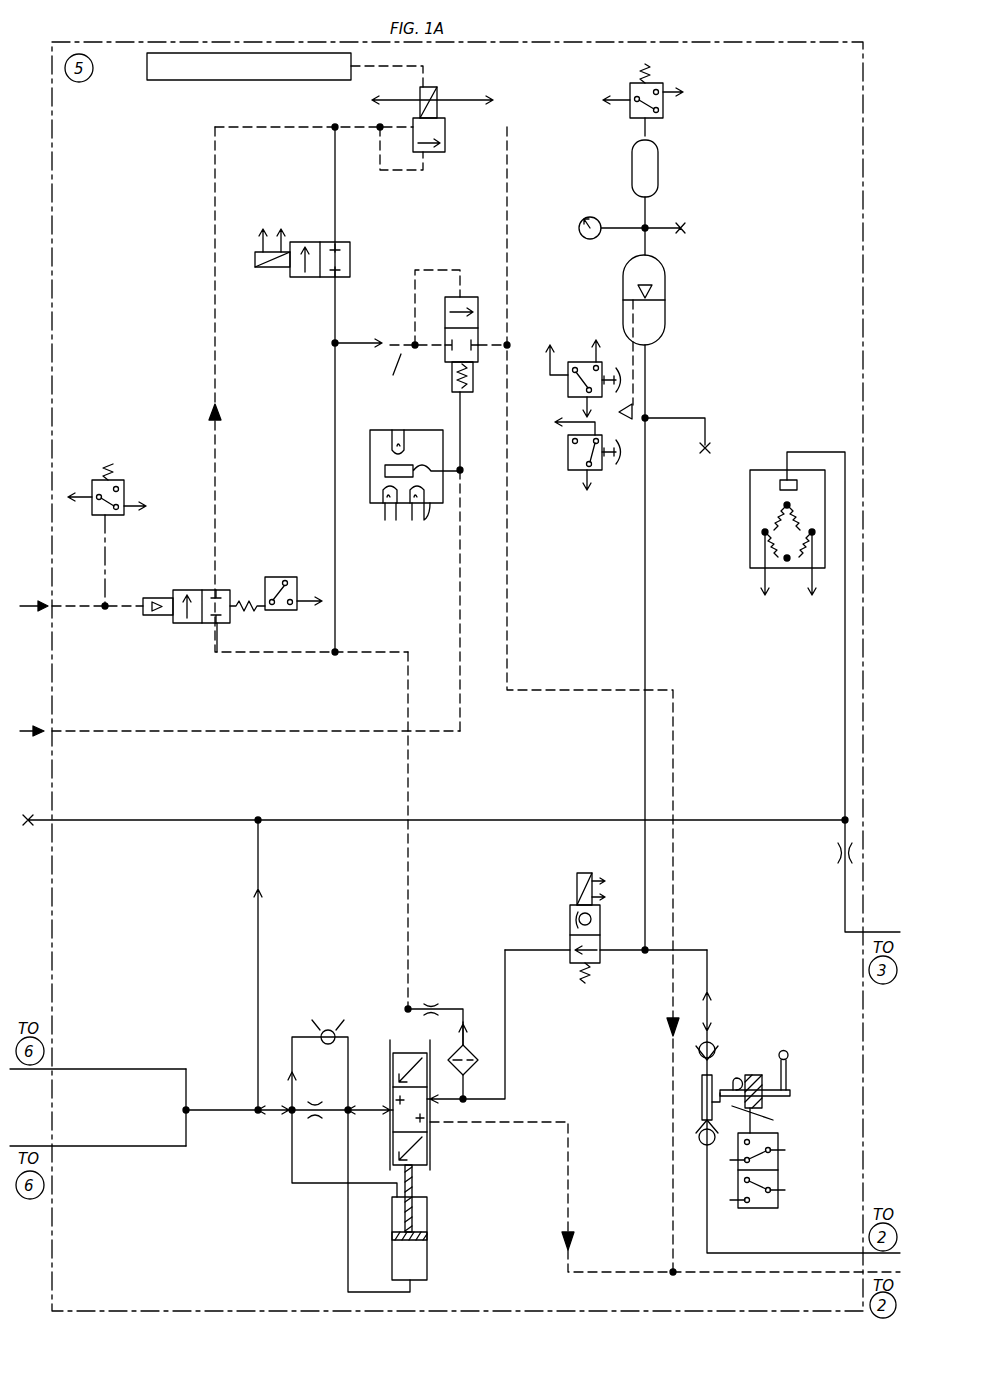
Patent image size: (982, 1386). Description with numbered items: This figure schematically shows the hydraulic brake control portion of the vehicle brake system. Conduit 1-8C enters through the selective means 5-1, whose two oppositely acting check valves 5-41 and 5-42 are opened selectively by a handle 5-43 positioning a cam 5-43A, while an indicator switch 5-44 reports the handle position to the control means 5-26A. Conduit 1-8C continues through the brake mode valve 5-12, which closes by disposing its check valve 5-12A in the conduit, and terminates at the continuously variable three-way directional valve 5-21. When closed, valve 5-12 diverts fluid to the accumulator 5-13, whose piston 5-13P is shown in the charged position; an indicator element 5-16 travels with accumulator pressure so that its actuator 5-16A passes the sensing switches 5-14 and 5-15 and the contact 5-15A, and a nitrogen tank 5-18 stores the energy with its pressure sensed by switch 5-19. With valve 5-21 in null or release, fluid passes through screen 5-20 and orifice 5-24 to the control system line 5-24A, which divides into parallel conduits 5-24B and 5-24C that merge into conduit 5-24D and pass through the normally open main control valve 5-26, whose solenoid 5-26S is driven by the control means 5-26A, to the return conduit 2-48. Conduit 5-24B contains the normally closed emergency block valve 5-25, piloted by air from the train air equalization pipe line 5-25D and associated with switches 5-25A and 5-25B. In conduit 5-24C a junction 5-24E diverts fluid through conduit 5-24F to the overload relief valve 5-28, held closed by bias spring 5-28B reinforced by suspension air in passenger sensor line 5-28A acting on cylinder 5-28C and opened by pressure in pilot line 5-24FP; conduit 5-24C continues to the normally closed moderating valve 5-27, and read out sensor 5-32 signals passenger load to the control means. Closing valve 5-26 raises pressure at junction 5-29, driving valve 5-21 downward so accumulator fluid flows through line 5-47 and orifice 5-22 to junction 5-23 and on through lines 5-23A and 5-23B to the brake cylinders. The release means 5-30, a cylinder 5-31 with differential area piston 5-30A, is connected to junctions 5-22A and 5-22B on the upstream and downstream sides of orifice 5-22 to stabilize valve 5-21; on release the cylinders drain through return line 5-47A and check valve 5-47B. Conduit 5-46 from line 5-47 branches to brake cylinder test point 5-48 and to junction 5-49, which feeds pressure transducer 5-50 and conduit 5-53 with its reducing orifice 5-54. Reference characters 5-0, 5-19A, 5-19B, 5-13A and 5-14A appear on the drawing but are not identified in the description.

The control system 5-0 is at (133, 34).
The control means 5-26A is at (190, 89).
The main control valve 5-26 is at (435, 152).
The solenoid 5-26S is at (435, 87).
The conduit 5-24D is at (345, 127).
The conduit 5-24C is at (335, 195).
The conduit 5-24B is at (305, 656).
The control system line 5-24A is at (410, 790).
The moderating valve 5-27 is at (305, 277).
The overload relief valve 5-28 is at (462, 297).
The bias spring 5-28B is at (450, 377).
The cylinder 5-28C is at (460, 402).
The pilot line 5-24FP is at (414, 316).
The junction 5-24E is at (334, 343).
The conduit 5-24F is at (373, 372).
The return conduit 2-48 is at (507, 648).
The check valve 5-42 is at (697, 1052).
The read out sensor 5-32 is at (430, 518).
The train air equalization pipe line 5-25D is at (62, 612).
The switch 5-25A is at (112, 478).
The emergency block valve 5-25 is at (190, 590).
The switch 5-25B is at (279, 577).
The pressure responsive switch 5-19 is at (630, 95).
The spring 5-19B is at (654, 85).
The contact 5-19A is at (665, 112).
The tank 5-18 is at (660, 168).
The accumulator piston 5-13P is at (650, 297).
The accumulator 5-13 is at (665, 316).
The indicator element 5-16 is at (637, 362).
The supply line 5-13A is at (645, 645).
The indicator actuator 5-16A is at (648, 417).
The sensing switch 5-14 is at (576, 362).
The actuator 5-14A is at (622, 380).
The sensing switch 5-15 is at (577, 470).
The contact 5-15A is at (625, 462).
The pressure sensitive transducer 5-50 is at (793, 570).
The passenger sensor line 5-28A is at (229, 733).
The brake cylinder test point 5-48 is at (40, 820).
The conduit 5-46 is at (258, 942).
The junction 5-49 is at (845, 823).
The reducing orifice 5-54 is at (835, 851).
The conduit 5-53 is at (845, 902).
The brake mode valve 5-12 is at (602, 960).
The check valve 5-12A is at (574, 920).
The orifice 5-24 is at (440, 1005).
The junction 5-29 is at (410, 1006).
The screen 5-20 is at (480, 1053).
The conduit 1-8C is at (505, 1048).
The cam 5-43A is at (700, 1098).
The selective means 5-1 is at (754, 1056).
The handle 5-43 is at (790, 1060).
The check valve 5-41 is at (697, 1132).
The indicator switch 5-44 is at (778, 1158).
The line 5-47 is at (343, 1084).
The junction 5-23 is at (185, 1110).
The line 5-23A is at (154, 1068).
The line 5-23B is at (150, 1146).
The orifice 5-22 is at (315, 1118).
The check valve 5-47B is at (332, 1028).
The junction point 5-22B is at (288, 1122).
The junction 5-22A is at (348, 1110).
The directional valve 5-21 is at (426, 1136).
The differential area piston 5-30A is at (417, 1230).
The release means 5-30 is at (384, 1257).
The cylinder 5-31 is at (427, 1265).
The return line 5-47A is at (550, 1176).